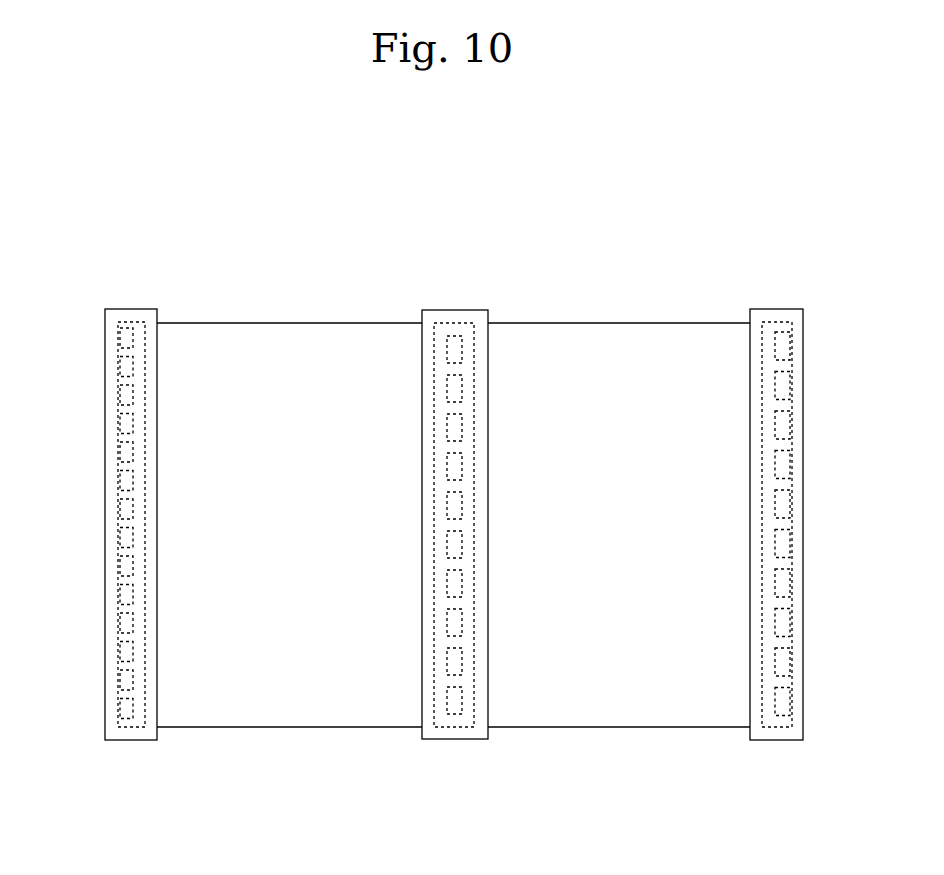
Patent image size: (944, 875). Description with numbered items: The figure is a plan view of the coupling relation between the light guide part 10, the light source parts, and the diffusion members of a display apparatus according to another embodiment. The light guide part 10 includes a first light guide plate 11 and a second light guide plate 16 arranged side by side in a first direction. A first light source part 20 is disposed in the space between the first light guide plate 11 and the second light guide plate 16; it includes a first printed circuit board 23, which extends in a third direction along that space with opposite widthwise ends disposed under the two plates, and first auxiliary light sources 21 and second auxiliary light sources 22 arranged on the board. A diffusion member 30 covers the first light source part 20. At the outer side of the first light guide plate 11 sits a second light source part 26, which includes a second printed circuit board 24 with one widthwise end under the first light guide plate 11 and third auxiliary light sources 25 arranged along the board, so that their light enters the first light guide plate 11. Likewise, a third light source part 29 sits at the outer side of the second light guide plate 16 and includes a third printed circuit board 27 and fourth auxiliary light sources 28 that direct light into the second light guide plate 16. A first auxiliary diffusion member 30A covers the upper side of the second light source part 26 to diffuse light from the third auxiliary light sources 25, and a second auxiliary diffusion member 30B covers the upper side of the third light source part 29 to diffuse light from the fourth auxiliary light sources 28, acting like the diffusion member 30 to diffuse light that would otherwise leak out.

The light guide part 10 is at (453, 465).
The first light guide plate 11 is at (324, 342).
The second light guide plate 16 is at (619, 488).
The first light source part 20 is at (467, 587).
The first auxiliary light sources 21 is at (447, 660).
The second auxiliary light sources 22 is at (461, 700).
The first printed circuit board 23 is at (453, 728).
The second printed circuit board 24 is at (119, 728).
The third auxiliary light sources 25 is at (133, 700).
The second light source part 26 is at (114, 586).
The third printed circuit board 27 is at (783, 728).
The fourth auxiliary light sources 28 is at (772, 702).
The third light source part 29 is at (796, 586).
The diffusion member 30 is at (488, 680).
The first auxiliary diffusion member 30A is at (107, 685).
The second auxiliary diffusion member 30B is at (804, 685).